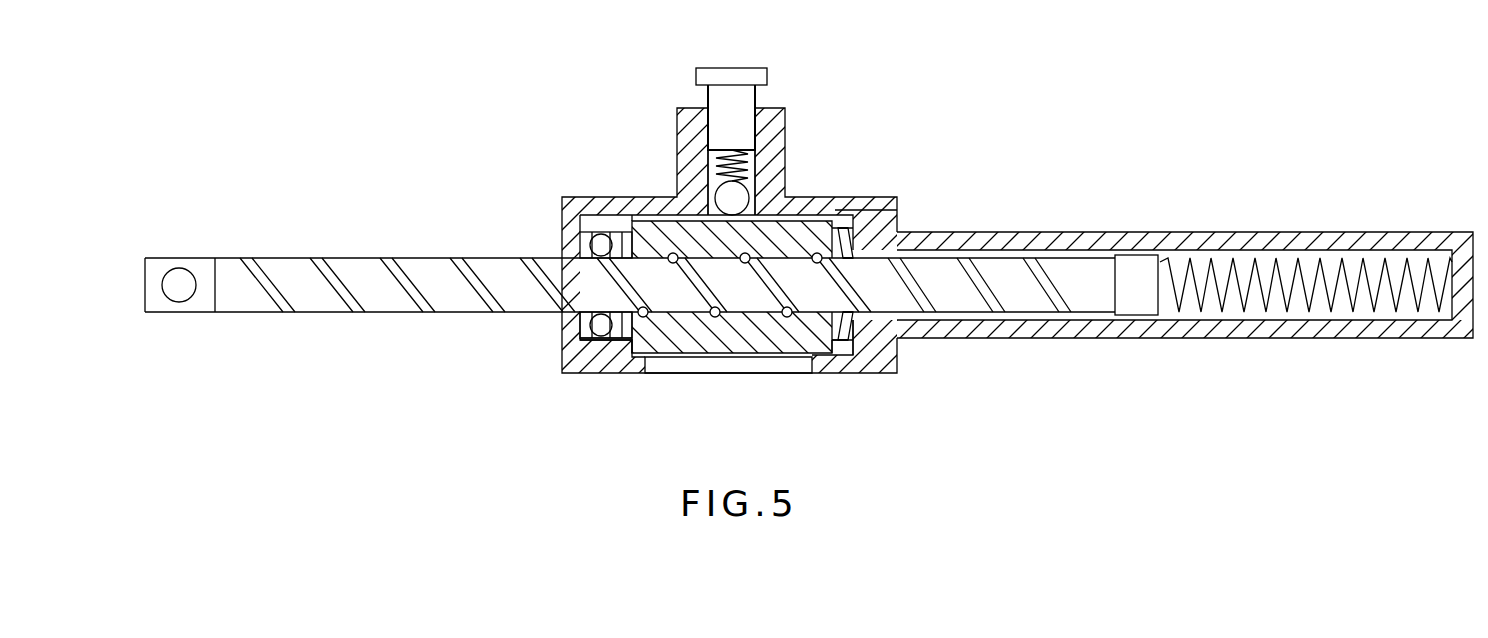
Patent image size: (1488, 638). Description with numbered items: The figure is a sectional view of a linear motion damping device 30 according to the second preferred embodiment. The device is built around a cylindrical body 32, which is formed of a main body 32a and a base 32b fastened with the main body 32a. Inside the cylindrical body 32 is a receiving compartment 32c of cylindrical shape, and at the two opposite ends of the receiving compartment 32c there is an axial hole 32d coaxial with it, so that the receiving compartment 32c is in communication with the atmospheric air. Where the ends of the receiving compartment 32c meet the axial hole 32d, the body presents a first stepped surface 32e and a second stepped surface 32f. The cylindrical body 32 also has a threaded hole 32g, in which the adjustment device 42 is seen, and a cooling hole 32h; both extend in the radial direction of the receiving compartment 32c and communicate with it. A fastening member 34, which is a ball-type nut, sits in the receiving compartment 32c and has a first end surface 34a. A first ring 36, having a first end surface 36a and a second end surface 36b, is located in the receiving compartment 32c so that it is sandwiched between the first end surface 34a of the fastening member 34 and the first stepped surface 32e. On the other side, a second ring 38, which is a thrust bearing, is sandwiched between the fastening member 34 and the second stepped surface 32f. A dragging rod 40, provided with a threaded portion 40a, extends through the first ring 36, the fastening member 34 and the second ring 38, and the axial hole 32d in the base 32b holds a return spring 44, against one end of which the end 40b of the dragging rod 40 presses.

The linear motion damping device 30 is at (993, 80).
The cylindrical body 32 is at (1020, 164).
The main body 32a is at (895, 206).
The base 32b is at (1010, 238).
The receiving compartment 32c is at (598, 222).
The axial hole 32d is at (578, 318).
The first stepped surface 32e is at (847, 345).
The second stepped surface 32f is at (588, 340).
The threaded hole 32g is at (753, 165).
The cooling hole 32h is at (718, 361).
The fastening member 34 is at (757, 346).
The first end surface 34a is at (853, 210).
The first ring 36 is at (845, 340).
The first end surface 36a is at (880, 262).
The second end surface 36b is at (896, 225).
The second ring 38 is at (584, 238).
The dragging rod 40 is at (360, 252).
The threaded portion 40a is at (350, 300).
The end of dragging rod 40b is at (1163, 254).
The adjustment device 42 is at (766, 96).
The return spring 44 is at (1232, 305).